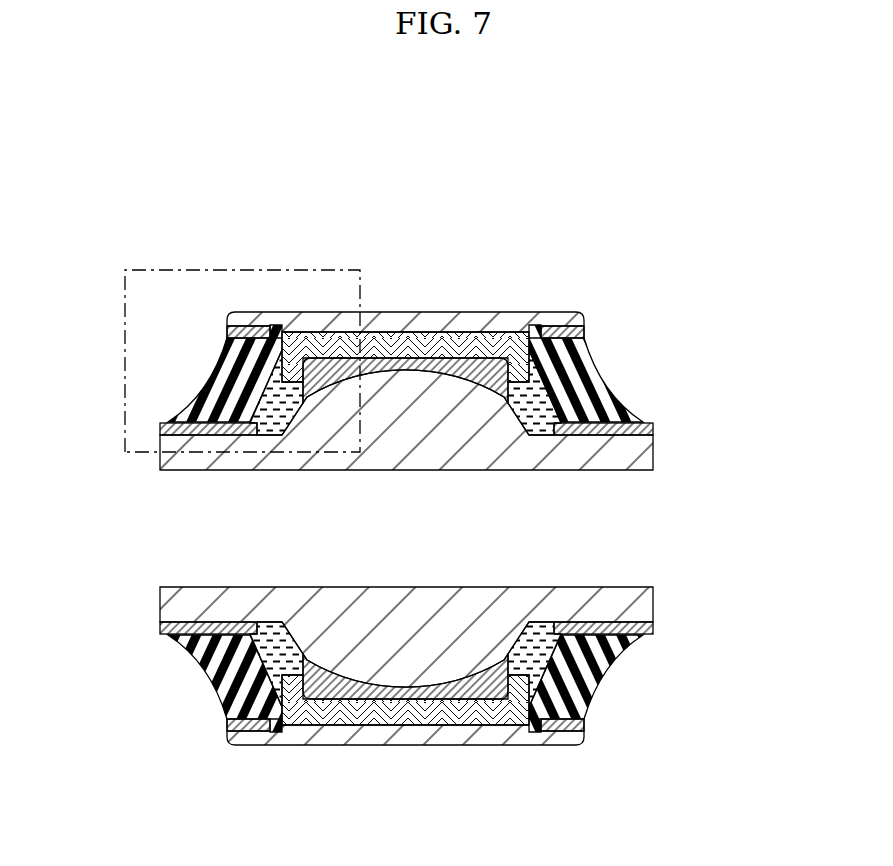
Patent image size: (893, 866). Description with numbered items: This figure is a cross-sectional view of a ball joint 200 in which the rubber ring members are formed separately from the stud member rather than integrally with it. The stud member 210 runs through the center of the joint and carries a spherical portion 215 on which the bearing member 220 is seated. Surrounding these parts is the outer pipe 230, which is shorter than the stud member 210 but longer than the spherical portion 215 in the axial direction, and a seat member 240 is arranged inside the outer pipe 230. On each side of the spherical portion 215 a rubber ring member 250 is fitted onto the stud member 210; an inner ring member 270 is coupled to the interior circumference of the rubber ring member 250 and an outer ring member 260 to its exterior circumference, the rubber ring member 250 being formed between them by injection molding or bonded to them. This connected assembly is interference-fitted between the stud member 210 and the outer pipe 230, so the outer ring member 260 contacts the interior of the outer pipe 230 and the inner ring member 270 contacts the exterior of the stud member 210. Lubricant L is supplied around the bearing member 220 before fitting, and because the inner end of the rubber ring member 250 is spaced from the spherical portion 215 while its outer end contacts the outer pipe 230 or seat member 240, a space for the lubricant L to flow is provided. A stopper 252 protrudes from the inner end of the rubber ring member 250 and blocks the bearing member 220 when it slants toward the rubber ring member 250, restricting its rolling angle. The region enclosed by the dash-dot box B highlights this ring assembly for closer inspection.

The ball joint 200 is at (450, 117).
The stud member 210 is at (605, 456).
The spherical portion 215 is at (572, 403).
The bearing member 220 is at (575, 363).
The outer pipe 230 is at (472, 320).
The seat member 240 is at (497, 352).
The rubber ring member 250 is at (228, 378).
The stopper 252 is at (250, 406).
The outer ring member 260 is at (238, 331).
The inner ring member 270 is at (163, 431).
The detail region B is at (243, 268).
The lubricant L is at (535, 656).